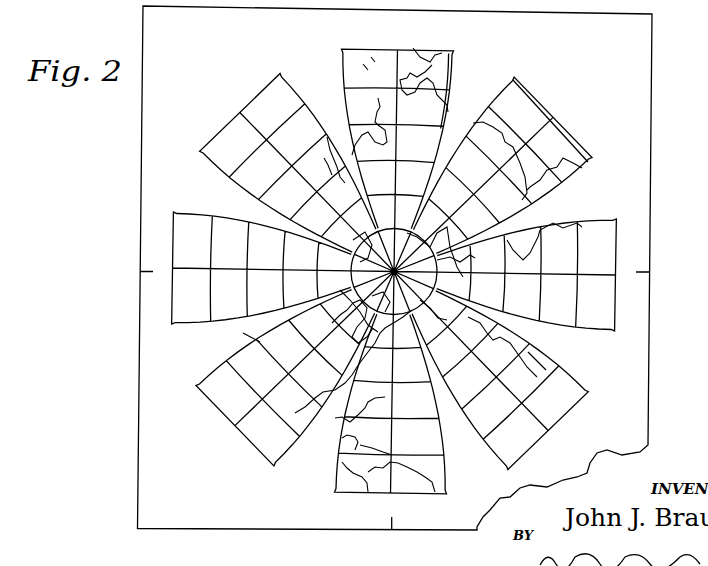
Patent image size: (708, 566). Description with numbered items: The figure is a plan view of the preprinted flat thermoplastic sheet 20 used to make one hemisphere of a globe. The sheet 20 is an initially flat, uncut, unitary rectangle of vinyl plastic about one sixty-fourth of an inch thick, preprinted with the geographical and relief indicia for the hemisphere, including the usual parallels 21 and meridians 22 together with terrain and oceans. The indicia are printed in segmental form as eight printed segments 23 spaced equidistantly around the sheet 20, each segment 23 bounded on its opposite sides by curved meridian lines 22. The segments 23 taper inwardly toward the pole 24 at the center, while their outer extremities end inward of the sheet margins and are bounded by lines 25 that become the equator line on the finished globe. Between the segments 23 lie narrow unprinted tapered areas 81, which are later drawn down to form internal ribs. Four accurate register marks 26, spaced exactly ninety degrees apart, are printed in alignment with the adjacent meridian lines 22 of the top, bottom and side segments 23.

The flat rectangular sheet of thermoplastic material 20 is at (632, 115).
The parallels 21 is at (520, 355).
The meridians 22 is at (213, 164).
The printed segments 23 is at (484, 105).
The pole 24 is at (431, 284).
The lines constituting the equator line 25 is at (565, 134).
The register marks 26 is at (638, 273).
The narrow unprinted tapered areas 81 is at (243, 332).